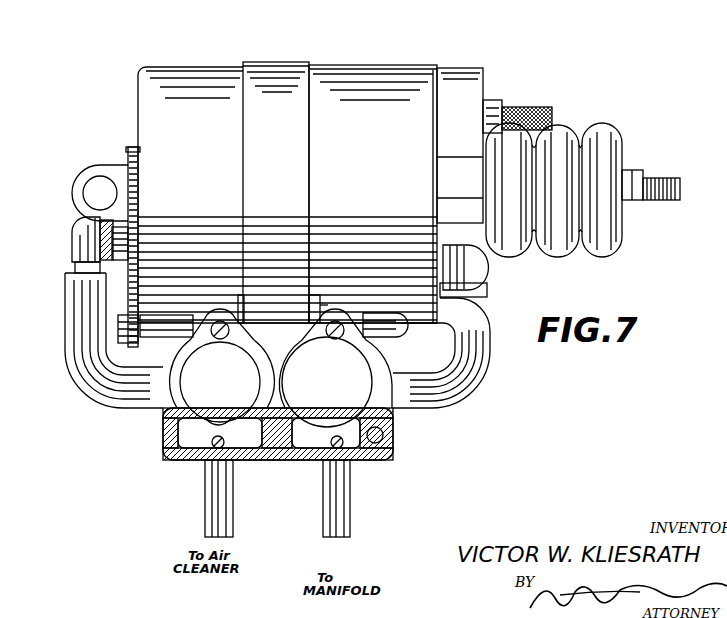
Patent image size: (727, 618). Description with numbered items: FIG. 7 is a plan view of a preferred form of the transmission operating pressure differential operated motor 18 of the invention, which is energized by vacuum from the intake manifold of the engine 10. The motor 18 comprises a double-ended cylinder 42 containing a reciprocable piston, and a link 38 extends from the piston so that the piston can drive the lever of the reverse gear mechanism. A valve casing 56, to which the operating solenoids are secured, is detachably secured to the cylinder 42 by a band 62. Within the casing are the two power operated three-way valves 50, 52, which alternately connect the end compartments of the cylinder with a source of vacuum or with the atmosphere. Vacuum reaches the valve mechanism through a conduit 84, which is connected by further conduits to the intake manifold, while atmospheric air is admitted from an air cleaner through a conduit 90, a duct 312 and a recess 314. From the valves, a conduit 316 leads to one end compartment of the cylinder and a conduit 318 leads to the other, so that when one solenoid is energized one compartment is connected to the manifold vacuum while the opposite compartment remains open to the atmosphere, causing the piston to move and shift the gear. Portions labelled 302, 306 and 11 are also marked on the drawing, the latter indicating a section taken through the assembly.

The housing section 302 is at (101, 5).
The housing section 306 is at (261, 6).
The band 62 is at (277, 70).
The double-ended cylinder 42 is at (390, 80).
The motor 18 is at (487, 93).
The link 38 is at (663, 178).
The conduit 316 is at (82, 347).
The conduit 318 is at (485, 382).
The engine 10 is at (147, 380).
The section line 11 is at (287, 332).
The three-way valve 50 is at (192, 380).
The three-way valve 52 is at (358, 390).
The duct 312 is at (212, 425).
The recess 314 is at (248, 440).
The casing 56 is at (387, 447).
The conduit 90 is at (218, 490).
The conduit 84 is at (347, 493).